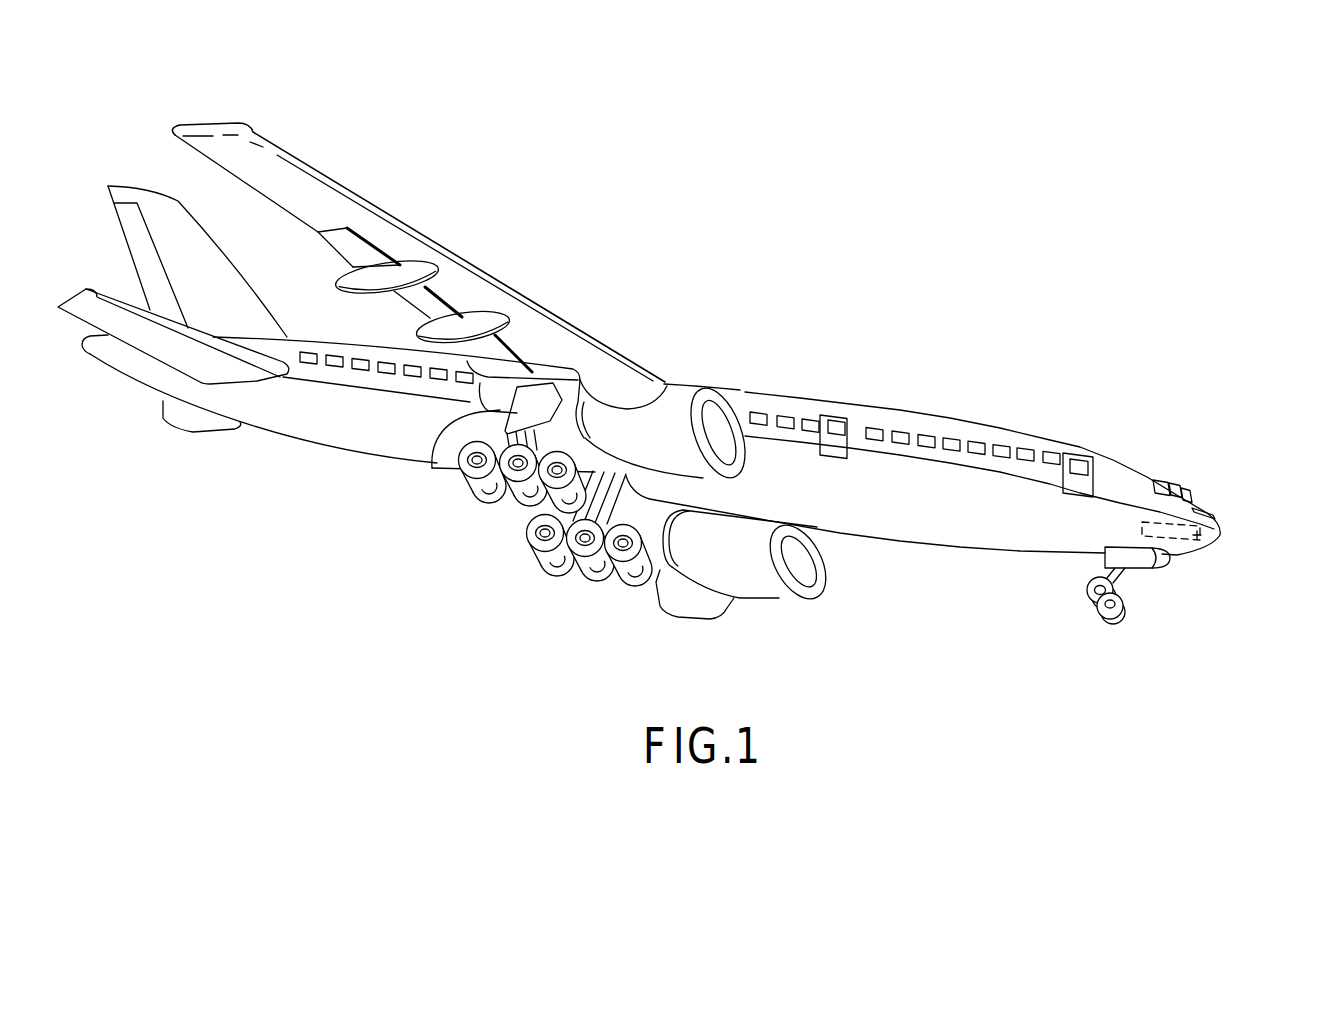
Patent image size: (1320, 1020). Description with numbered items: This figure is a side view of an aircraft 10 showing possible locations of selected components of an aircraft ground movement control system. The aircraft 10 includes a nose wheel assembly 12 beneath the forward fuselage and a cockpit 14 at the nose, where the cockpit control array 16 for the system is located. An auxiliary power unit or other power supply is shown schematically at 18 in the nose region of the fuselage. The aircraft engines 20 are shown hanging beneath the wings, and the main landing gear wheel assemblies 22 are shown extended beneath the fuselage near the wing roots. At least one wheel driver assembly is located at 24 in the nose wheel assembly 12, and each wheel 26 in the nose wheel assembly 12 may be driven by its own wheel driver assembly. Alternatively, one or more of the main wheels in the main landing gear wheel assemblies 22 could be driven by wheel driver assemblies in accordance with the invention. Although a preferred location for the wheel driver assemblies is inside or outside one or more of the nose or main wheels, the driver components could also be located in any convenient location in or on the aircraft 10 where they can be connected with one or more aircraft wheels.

The aircraft 10 is at (917, 368).
The nose wheel assembly 12 is at (1106, 624).
The cockpit 14 is at (1186, 483).
The cockpit control array 16 is at (1222, 518).
The auxiliary power unit or other power supply 18 is at (1222, 545).
The aircraft engines 20 is at (690, 387).
The main landing gear wheel assemblies 22 is at (456, 499).
The wheel driver assembly location 24 is at (1118, 605).
The wheel 26 is at (1086, 591).